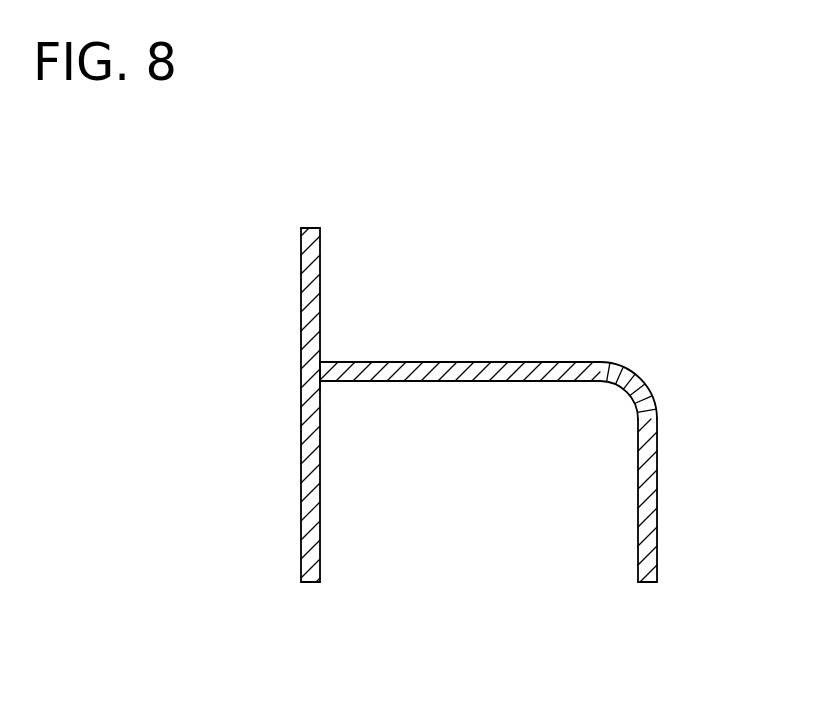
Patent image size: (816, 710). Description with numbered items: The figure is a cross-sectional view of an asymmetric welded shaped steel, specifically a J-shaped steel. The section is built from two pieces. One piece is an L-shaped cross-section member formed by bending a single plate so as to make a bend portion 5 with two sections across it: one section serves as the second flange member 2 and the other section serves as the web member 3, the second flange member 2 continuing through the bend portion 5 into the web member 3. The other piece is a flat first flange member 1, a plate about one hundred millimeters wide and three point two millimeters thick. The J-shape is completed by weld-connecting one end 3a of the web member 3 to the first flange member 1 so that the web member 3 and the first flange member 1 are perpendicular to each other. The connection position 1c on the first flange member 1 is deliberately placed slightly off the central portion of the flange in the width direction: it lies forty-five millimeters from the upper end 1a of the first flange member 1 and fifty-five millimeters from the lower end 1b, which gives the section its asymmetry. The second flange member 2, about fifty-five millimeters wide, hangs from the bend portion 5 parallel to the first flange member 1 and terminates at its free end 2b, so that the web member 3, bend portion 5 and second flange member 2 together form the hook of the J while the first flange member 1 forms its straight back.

The first flange member 1 is at (305, 295).
The upper end 1a is at (310, 227).
The lower end 1b is at (310, 584).
The connection position 1c is at (321, 383).
The web member 3 is at (472, 362).
The one end of the web member 3a is at (321, 360).
The bend portion 5 is at (637, 380).
The second flange member 2 is at (657, 502).
The end of the second flange member 2b is at (647, 585).